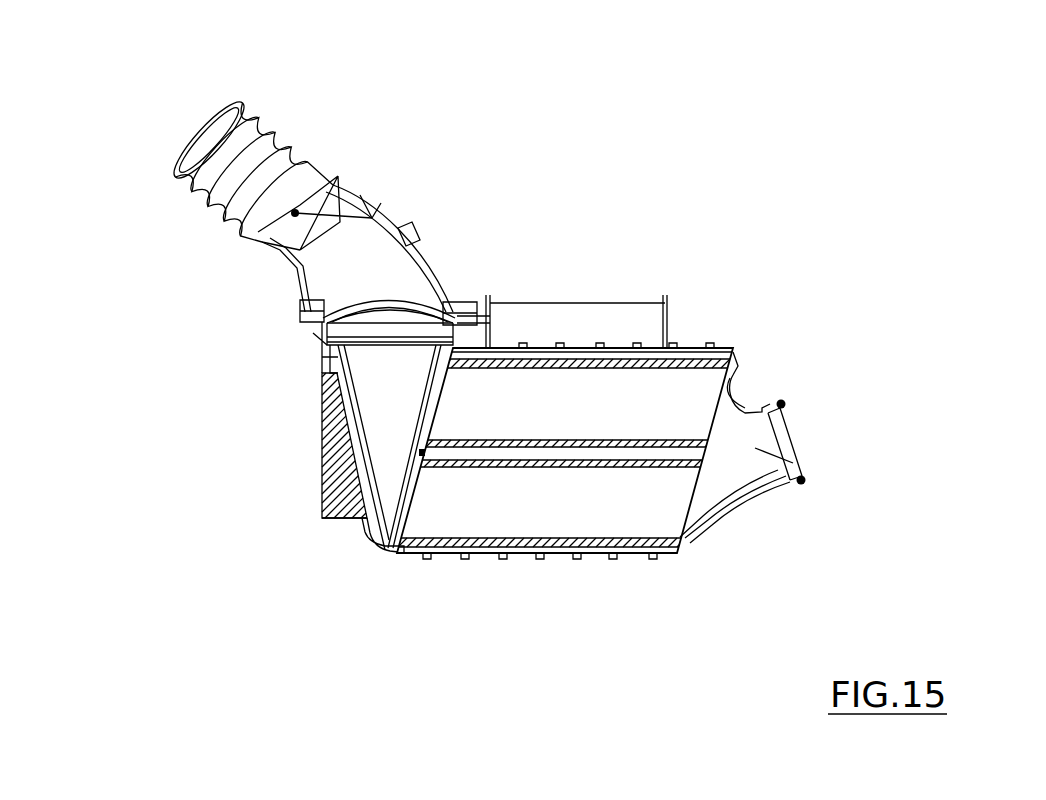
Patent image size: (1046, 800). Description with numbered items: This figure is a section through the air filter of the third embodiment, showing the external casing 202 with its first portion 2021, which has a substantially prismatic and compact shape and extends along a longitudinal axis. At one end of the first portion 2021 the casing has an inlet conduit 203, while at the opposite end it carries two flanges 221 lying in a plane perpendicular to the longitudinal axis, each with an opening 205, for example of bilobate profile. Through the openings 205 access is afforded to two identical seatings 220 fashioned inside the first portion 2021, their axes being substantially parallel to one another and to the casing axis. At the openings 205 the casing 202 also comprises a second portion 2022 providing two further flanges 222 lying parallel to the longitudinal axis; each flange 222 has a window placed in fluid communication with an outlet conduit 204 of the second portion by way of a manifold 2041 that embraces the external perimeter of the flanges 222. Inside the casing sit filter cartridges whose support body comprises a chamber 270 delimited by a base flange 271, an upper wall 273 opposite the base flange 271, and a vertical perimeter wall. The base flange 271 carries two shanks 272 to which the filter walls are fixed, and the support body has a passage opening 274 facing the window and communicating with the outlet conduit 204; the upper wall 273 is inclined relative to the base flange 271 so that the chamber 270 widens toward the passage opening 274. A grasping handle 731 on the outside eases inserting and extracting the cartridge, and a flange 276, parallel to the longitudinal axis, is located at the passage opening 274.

The external casing 202 is at (494, 359).
The outlet conduit 204 is at (197, 202).
The manifold 2041 is at (410, 236).
The second portion 2022 is at (250, 282).
The first portion 2021 is at (397, 301).
The flanges 221 is at (460, 343).
The flanges 222 is at (318, 343).
The flange 276 is at (327, 357).
The passage opening 274 is at (323, 415).
The grasping handle 731 is at (345, 500).
The chamber 270 is at (410, 401).
The opening 205 is at (461, 416).
The seatings 220 is at (595, 421).
The upper wall 273 is at (363, 532).
The base flange 271 is at (398, 543).
The shanks 272 is at (422, 466).
The inlet conduit 203 is at (757, 453).